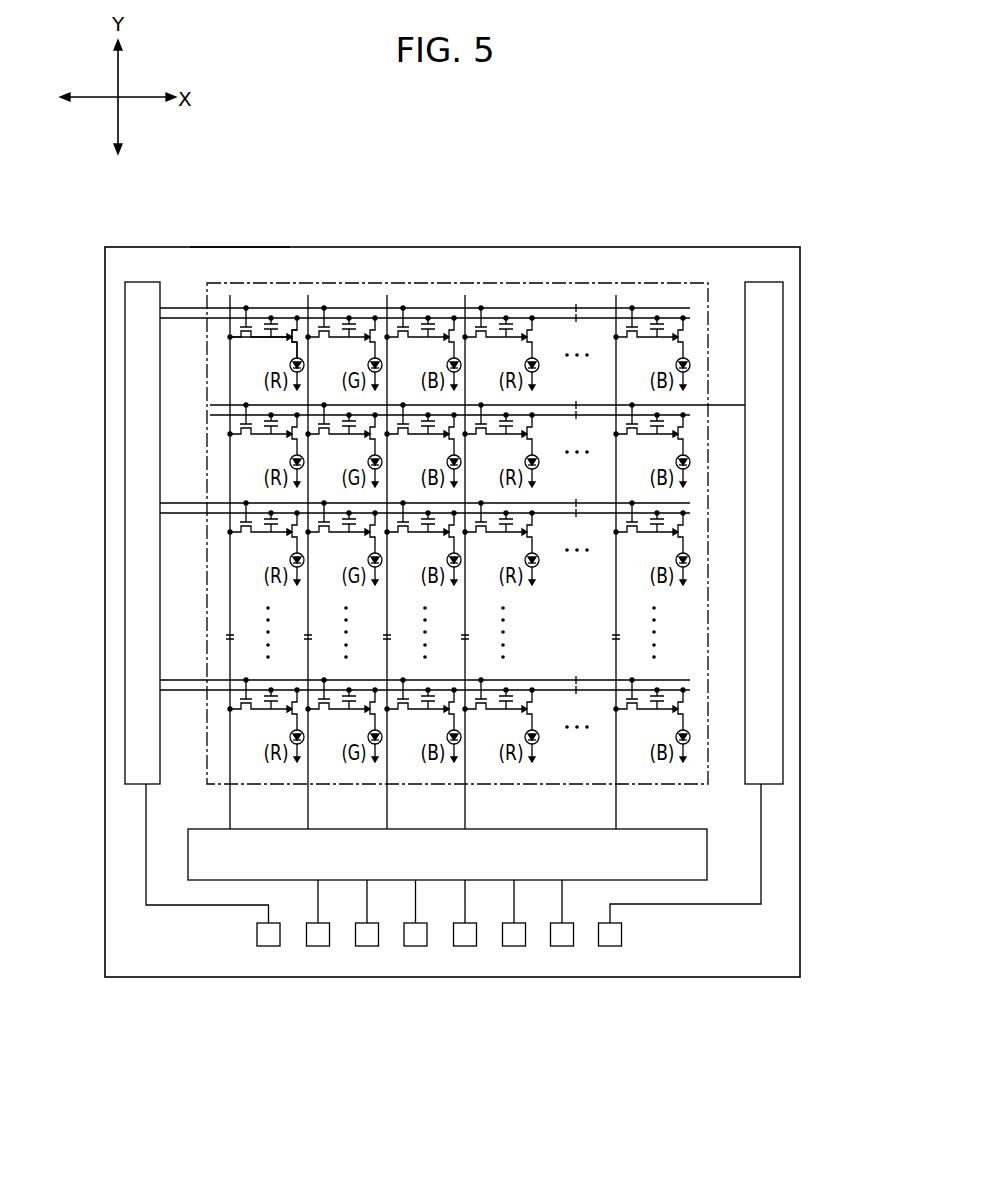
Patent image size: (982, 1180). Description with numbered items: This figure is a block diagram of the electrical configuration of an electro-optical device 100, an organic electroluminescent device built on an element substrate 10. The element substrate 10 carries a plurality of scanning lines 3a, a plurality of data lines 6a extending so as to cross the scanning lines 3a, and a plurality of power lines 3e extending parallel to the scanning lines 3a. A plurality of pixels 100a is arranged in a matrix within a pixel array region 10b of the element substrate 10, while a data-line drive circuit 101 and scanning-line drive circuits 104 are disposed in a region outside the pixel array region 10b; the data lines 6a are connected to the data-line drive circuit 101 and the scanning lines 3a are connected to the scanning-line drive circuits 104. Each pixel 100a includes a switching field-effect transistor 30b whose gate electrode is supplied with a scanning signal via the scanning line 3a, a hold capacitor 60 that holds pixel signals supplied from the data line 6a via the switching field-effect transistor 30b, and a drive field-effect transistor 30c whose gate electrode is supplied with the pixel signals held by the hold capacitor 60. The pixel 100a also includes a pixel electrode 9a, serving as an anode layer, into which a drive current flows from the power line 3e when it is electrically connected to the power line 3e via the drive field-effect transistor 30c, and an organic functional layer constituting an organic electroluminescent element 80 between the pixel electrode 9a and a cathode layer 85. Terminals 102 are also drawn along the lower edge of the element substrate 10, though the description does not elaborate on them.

The element substrate 10 is at (460, 247).
The pixel array region 10b is at (635, 283).
The electro-optical device 100 is at (236, 238).
The pixel 100a is at (226, 346).
The switching field-effect transistor 30b is at (257, 322).
The hold capacitor 60 is at (284, 320).
The drive field-effect transistor 30c is at (302, 341).
The pixel electrode 9a is at (296, 348).
The organic electroluminescent element 80 is at (292, 372).
The cathode layer 85 is at (300, 378).
The data line 6a is at (387, 296).
The scanning line 3a is at (593, 307).
The power line 3e is at (556, 307).
The data-line drive circuit 101 is at (618, 881).
The terminal 102 is at (318, 946).
The scanning-line drive circuit 104 is at (125, 538).